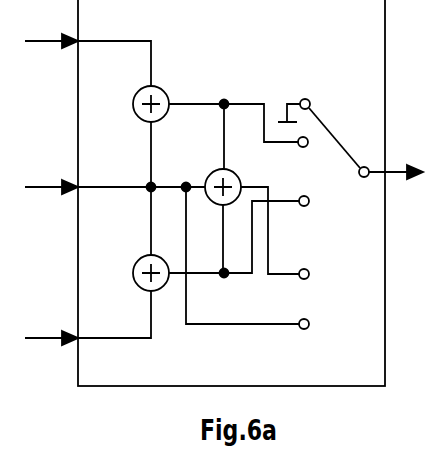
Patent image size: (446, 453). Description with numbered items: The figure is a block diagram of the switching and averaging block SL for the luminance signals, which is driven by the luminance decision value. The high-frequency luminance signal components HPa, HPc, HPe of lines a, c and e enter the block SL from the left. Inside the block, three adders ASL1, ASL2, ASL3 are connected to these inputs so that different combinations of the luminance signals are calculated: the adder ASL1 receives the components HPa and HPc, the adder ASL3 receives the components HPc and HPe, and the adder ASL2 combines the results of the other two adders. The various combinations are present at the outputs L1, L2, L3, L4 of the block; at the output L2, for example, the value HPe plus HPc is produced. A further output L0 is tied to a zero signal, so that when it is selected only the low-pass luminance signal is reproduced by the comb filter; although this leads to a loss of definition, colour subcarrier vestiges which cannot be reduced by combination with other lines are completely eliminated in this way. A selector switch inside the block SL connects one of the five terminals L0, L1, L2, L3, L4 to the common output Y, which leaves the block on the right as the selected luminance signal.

The switching and averaging block SL is at (231, 193).
The high-frequency luminance signal component of line a HPa is at (51, 27).
The high-frequency luminance signal component of line c HPc is at (51, 171).
The high-frequency luminance signal component of line e HPe is at (51, 324).
The adder ASL1 is at (163, 86).
The adder ASL2 is at (250, 180).
The adder ASL3 is at (128, 292).
The output L0 is at (312, 104).
The output L1 is at (316, 155).
The output L2 is at (322, 203).
The output L3 is at (322, 274).
The output L4 is at (322, 325).
The output signal Y is at (366, 164).